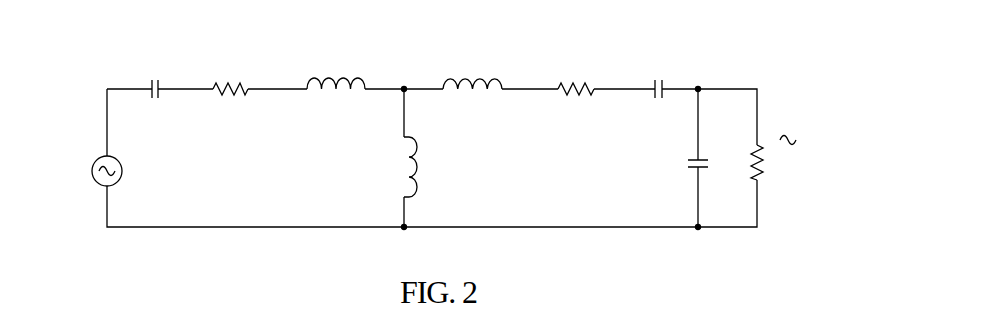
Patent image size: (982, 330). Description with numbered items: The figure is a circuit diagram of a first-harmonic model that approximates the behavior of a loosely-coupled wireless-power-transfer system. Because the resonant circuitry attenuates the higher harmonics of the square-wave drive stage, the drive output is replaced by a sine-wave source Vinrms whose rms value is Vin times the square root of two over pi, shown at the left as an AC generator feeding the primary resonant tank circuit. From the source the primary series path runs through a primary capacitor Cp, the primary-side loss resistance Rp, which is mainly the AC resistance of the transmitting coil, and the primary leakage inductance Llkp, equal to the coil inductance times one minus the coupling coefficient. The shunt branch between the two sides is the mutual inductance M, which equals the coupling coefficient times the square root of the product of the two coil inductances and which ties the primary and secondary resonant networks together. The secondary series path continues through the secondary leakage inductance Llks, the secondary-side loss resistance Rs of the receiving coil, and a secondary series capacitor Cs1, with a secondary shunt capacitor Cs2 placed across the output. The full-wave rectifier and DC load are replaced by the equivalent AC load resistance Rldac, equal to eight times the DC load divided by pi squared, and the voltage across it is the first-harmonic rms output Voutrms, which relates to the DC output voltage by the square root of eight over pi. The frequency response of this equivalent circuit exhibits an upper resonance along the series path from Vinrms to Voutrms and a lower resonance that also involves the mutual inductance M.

The input sine-wave rms voltage Vinrms is at (75, 171).
The primary capacitor Cp is at (156, 77).
The primary-side loss resistance Rp is at (230, 76).
The primary leakage inductance Llkp is at (336, 73).
The mutual inductance M is at (394, 167).
The secondary leakage inductance Llks is at (472, 72).
The secondary-side loss resistance Rs is at (576, 77).
The secondary series capacitor Cs1 is at (656, 78).
The secondary parallel capacitor Cs2 is at (680, 161).
The equivalent AC load resistance Rldac is at (777, 169).
The output first-harmonic rms voltage Voutrms is at (817, 138).